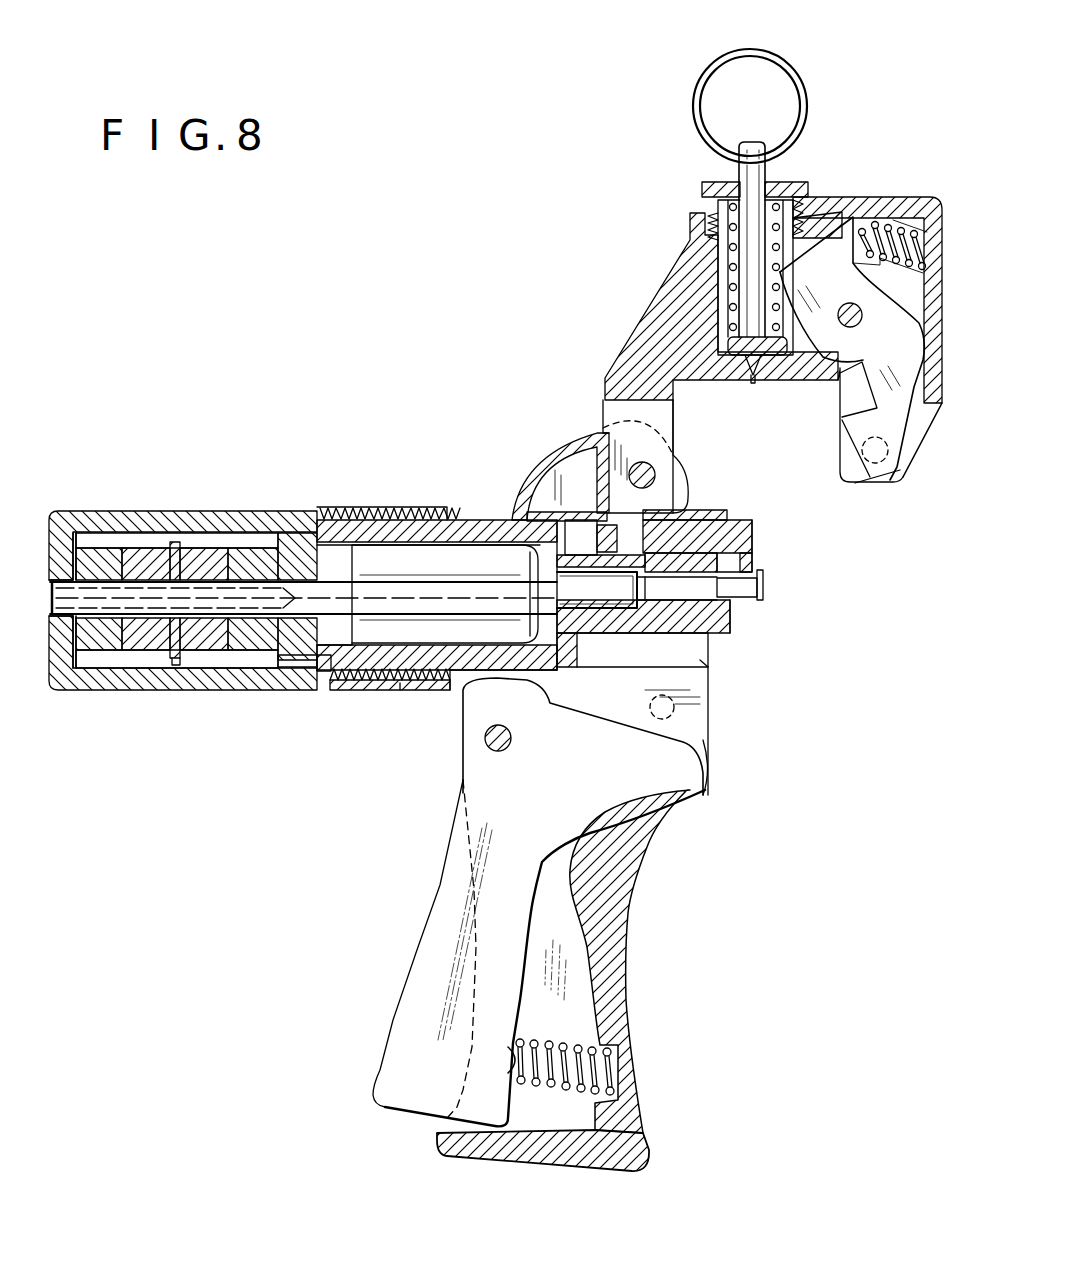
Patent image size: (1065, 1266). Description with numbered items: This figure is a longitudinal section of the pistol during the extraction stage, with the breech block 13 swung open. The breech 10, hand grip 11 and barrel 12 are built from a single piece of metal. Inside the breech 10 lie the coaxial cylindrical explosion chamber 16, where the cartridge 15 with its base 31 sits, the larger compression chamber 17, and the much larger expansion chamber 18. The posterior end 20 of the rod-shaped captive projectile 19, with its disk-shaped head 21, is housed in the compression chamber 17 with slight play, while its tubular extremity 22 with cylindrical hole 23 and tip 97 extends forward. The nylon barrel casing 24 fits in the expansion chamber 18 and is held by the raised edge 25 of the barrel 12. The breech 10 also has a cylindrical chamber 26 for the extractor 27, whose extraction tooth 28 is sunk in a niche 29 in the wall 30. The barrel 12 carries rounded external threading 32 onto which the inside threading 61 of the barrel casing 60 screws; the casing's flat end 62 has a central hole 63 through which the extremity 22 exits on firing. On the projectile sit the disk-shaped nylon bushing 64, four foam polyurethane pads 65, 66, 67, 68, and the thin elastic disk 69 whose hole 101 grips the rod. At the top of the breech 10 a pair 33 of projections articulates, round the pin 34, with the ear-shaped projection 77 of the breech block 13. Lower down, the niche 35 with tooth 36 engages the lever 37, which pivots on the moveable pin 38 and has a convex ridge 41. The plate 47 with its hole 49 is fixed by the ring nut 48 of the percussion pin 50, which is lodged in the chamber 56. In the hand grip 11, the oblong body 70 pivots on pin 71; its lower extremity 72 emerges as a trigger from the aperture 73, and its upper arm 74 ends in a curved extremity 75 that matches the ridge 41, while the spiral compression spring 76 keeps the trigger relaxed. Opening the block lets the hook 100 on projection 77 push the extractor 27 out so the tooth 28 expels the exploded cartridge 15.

The breech 10 is at (732, 630).
The hand grip 11 is at (638, 1140).
The barrel 12 is at (390, 516).
The breech block 13 is at (686, 240).
The cartridge 15 is at (747, 597).
The explosion chamber 16 is at (665, 595).
The compression chamber 17 is at (642, 603).
The expansion chamber 18 is at (363, 681).
The captive projectile 19 is at (400, 684).
The posterior end 20 is at (560, 560).
The disk-shaped head 21 is at (558, 631).
The tubular extremity 22 is at (64, 582).
The cylindrical hole 23 is at (134, 625).
The nylon barrel casing 24 is at (431, 683).
The raised edge 25 is at (314, 668).
The cylindrical chamber 26 is at (583, 542).
The extractor 27 is at (728, 534).
The extraction tooth 28 is at (752, 568).
The niche 29 is at (724, 566).
The wall 30 is at (735, 618).
The base 31 is at (766, 589).
The external threading 32 is at (362, 515).
The pair of longitudinal projections 33 is at (673, 412).
The pin 34 is at (652, 466).
The niche 35 is at (592, 668).
The tooth 36 is at (710, 668).
The lever 37 is at (878, 364).
The moveable pin 38 is at (862, 308).
The convex ridge 41 is at (892, 487).
The plate 47 is at (908, 197).
The ring nut 48 is at (800, 188).
The hole 49 is at (843, 208).
The percussion pin 50 is at (778, 172).
The chamber 56 is at (781, 248).
The barrel casing 60 is at (118, 522).
The inside threading 61 is at (332, 690).
The flat end 62 is at (88, 670).
The central hole 63 is at (66, 568).
The disk-shaped nylon bushing 64 is at (290, 660).
The foam polyurethane pad 65 is at (112, 652).
The foam polyurethane pad 66 is at (142, 565).
The foam polyurethane pad 67 is at (196, 565).
The foam polyurethane pad 68 is at (250, 565).
The elastic disk 69 is at (175, 660).
The oblong body 70 is at (456, 944).
The pin 71 is at (512, 748).
The lower extremity 72 is at (420, 1100).
The aperture 73 is at (472, 892).
The upper arm 74 is at (594, 788).
The extremity 75 is at (705, 758).
The spiral compression spring 76 is at (552, 1085).
The ear-shaped projection 77 is at (622, 492).
The tip 97 is at (46, 615).
The hook 100 is at (620, 522).
The hole 101 is at (196, 642).